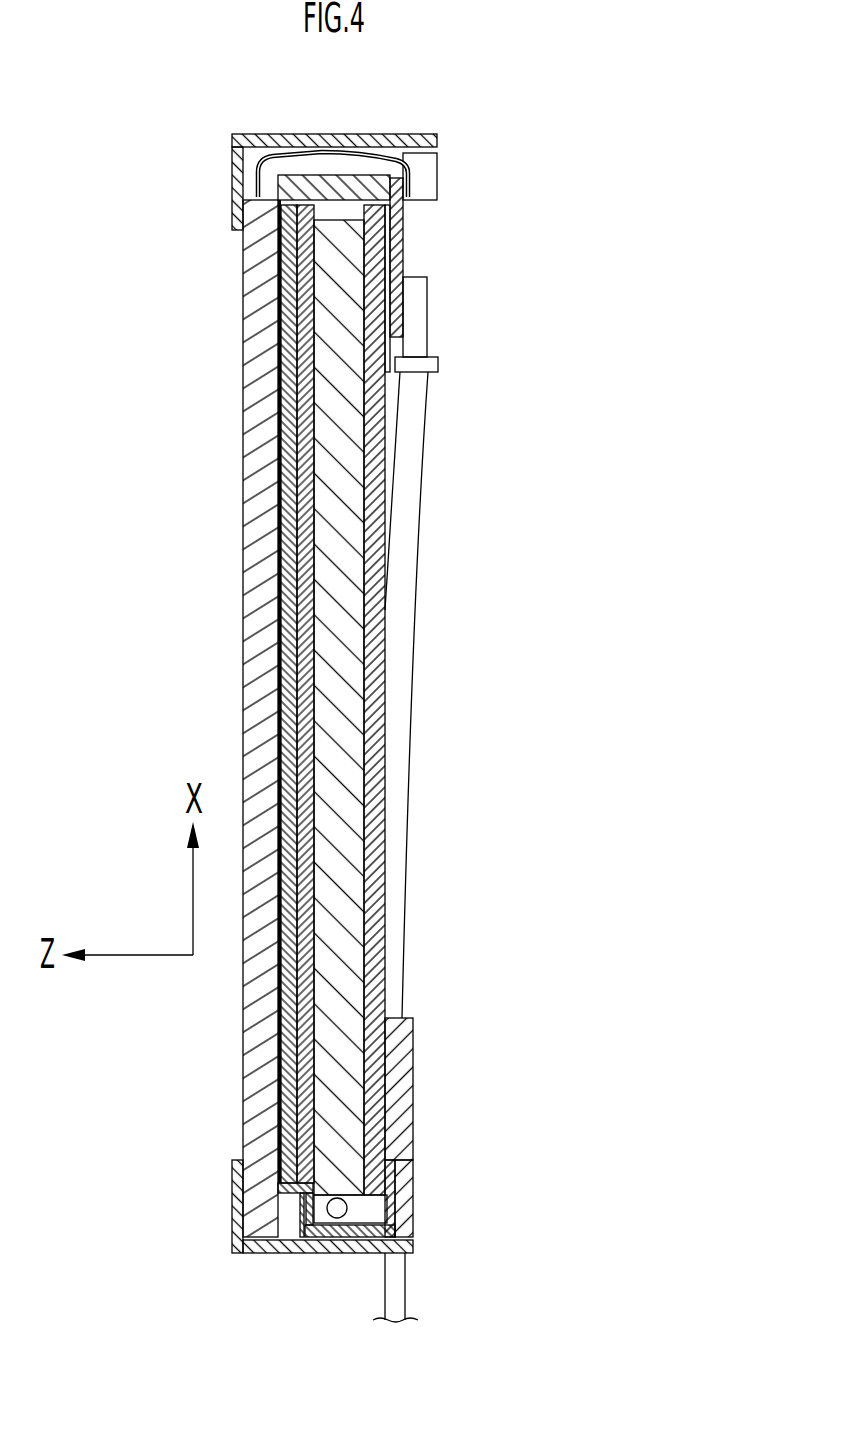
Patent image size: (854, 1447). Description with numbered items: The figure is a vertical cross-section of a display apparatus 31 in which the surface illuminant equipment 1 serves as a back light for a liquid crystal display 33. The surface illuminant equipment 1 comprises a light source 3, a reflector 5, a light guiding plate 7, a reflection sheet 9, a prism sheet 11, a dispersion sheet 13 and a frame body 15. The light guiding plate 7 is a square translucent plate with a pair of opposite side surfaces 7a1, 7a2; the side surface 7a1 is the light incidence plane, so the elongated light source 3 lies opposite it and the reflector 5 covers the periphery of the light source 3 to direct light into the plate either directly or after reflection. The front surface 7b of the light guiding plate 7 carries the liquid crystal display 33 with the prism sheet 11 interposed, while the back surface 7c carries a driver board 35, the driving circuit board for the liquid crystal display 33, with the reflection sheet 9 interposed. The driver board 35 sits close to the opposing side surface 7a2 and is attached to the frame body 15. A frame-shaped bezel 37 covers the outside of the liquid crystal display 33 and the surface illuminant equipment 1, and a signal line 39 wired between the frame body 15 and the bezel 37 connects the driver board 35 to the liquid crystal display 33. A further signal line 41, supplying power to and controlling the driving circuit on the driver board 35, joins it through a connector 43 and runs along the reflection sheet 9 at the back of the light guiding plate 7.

The surface illuminant equipment 1 is at (339, 163).
The light source 3 is at (335, 1227).
The reflector 5 is at (398, 1178).
The light guiding plate 7 is at (350, 640).
The light incidence plane 7a1 is at (358, 1202).
The side surface 7a2 is at (437, 188).
The front surface 7b is at (300, 612).
The back surface 7c is at (372, 725).
The reflection sheet 9 is at (378, 447).
The prism sheet 11 is at (281, 457).
The dispersion sheet 13 is at (283, 343).
The frame body 15 is at (312, 158).
The display apparatus 31 is at (383, 112).
The liquid crystal display 33 is at (243, 697).
The driver board 35 is at (405, 237).
The bezel 37 is at (232, 195).
The signal line 39 is at (263, 134).
The signal line 41 is at (405, 513).
The connector 43 is at (427, 310).